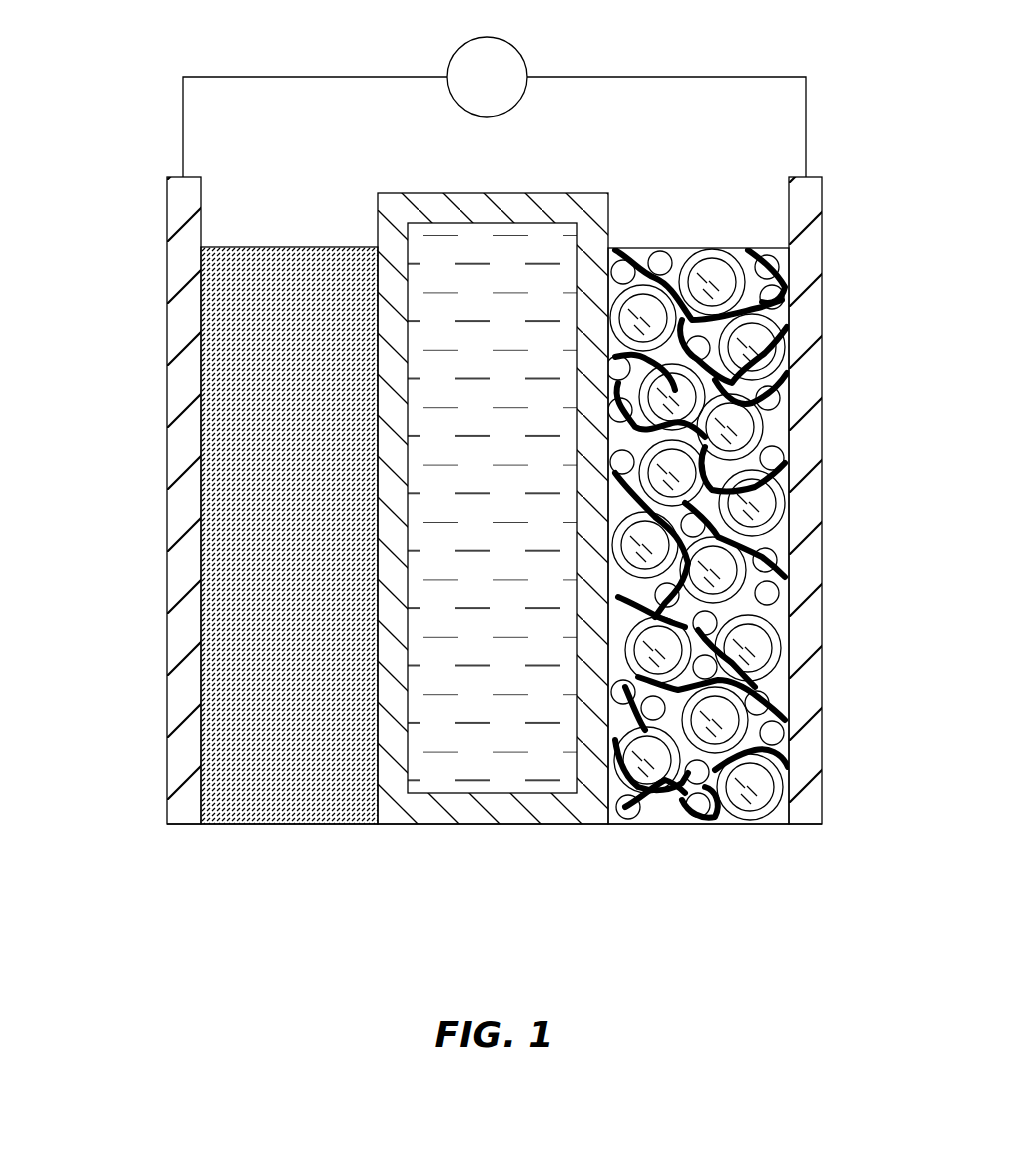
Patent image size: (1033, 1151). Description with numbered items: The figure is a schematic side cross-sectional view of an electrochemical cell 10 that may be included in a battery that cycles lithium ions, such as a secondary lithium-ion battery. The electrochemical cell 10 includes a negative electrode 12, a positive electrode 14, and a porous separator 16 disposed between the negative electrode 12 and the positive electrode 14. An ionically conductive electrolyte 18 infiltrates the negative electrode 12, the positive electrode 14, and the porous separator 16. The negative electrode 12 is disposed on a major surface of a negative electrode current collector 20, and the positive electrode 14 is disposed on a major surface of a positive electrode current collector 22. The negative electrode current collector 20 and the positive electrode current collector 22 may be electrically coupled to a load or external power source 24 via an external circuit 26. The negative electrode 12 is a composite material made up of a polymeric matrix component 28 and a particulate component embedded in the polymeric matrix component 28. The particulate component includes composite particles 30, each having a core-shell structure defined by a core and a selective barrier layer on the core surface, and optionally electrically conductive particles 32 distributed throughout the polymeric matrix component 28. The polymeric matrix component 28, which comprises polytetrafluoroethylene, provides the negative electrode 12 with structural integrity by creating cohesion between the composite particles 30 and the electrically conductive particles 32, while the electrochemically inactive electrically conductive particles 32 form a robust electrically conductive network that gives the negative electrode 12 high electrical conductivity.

The electrochemical cell 10 is at (142, 118).
The negative electrode 12 is at (722, 825).
The positive electrode 14 is at (272, 826).
The porous separator 16 is at (480, 825).
The ionically conductive electrolyte 18 is at (447, 222).
The negative electrode current collector 20 is at (821, 338).
The positive electrode current collector 22 is at (168, 433).
The load or external power source 24 is at (487, 77).
The external circuit 26 is at (806, 103).
The polymeric matrix component 28 is at (782, 548).
The composite particles 30 is at (717, 248).
The electrically conductive particles 32 is at (662, 247).